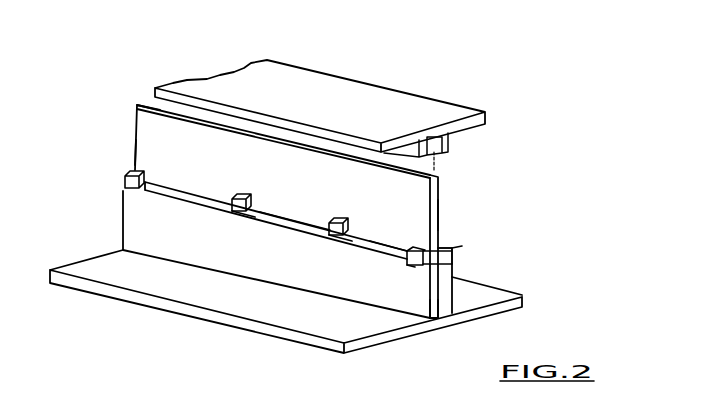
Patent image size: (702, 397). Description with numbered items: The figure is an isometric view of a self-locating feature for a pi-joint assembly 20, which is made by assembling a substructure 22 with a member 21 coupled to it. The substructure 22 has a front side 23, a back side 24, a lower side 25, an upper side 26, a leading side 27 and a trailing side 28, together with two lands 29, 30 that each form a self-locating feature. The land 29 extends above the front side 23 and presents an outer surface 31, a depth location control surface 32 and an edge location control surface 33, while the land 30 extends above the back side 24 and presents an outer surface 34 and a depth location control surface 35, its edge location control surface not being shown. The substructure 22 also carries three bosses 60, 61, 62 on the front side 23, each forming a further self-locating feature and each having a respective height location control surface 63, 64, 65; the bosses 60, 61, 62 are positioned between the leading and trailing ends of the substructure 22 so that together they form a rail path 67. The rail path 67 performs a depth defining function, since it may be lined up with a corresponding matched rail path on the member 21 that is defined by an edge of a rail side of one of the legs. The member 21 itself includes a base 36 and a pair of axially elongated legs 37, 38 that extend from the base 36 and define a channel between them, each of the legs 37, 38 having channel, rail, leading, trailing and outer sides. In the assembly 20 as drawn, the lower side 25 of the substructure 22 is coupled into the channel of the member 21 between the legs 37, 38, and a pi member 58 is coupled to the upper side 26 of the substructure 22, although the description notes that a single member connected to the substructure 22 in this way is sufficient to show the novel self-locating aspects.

The pi-joint assembly 20 is at (505, 210).
The member 21 is at (133, 222).
The substructure 22 is at (440, 190).
The front side 23 is at (143, 125).
The back side 24 is at (147, 94).
The lower side 25 is at (435, 320).
The upper side 26 is at (143, 103).
The leading side 27 is at (436, 207).
The trailing side 28 is at (143, 152).
The land 29 is at (382, 248).
The land 30 is at (450, 247).
The outer surface 31 is at (421, 252).
The depth location control surface 32 is at (413, 272).
The edge location control surface 33 is at (407, 260).
The outer surface 34 is at (453, 252).
The depth location control surface 35 is at (453, 263).
The base 36 is at (90, 268).
The first axially elongated leg 37 is at (418, 298).
The second axially elongated leg 38 is at (452, 294).
The pi member 58 is at (397, 100).
The boss 60 is at (342, 219).
The boss 61 is at (238, 193).
The boss 62 is at (140, 171).
The height location control surface 63 is at (344, 238).
The height location control surface 64 is at (237, 213).
The height location control surface 65 is at (162, 193).
The rail path 67 is at (291, 213).